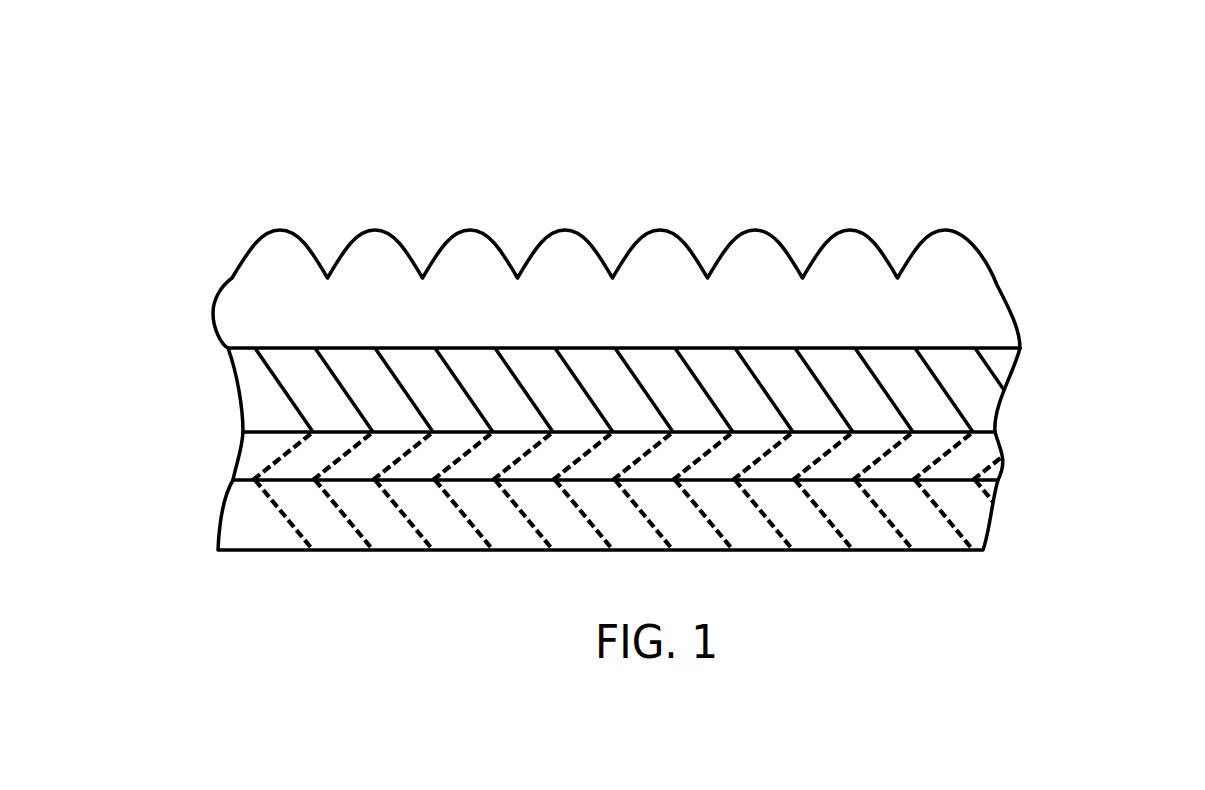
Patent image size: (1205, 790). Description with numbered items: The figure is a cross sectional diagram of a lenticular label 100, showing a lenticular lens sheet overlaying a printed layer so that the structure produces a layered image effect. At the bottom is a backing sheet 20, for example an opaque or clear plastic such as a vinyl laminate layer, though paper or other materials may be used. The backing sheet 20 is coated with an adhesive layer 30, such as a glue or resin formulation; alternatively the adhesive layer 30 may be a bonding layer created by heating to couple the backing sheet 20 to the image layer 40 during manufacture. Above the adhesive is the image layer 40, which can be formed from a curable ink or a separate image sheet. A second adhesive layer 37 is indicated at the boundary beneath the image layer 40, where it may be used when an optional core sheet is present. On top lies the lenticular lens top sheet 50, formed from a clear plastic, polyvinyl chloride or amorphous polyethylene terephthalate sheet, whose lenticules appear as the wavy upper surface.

The lenticular label 100 is at (313, 113).
The backing sheet 20 is at (970, 505).
The adhesive layer 30 is at (987, 460).
The second adhesive layer 37 is at (257, 424).
The image layer 40 is at (987, 393).
The lenticular lens top sheet 50 is at (968, 302).